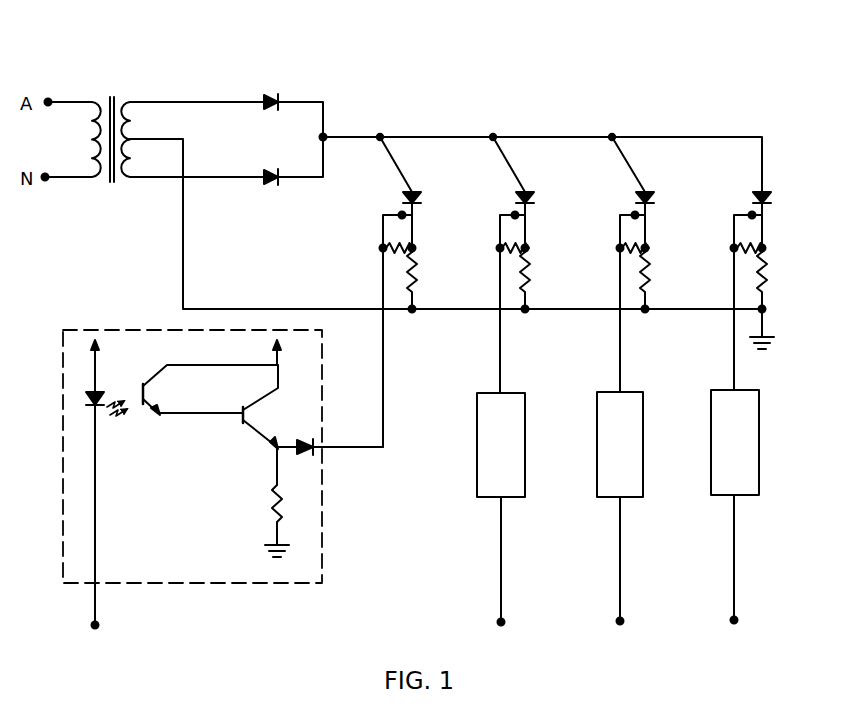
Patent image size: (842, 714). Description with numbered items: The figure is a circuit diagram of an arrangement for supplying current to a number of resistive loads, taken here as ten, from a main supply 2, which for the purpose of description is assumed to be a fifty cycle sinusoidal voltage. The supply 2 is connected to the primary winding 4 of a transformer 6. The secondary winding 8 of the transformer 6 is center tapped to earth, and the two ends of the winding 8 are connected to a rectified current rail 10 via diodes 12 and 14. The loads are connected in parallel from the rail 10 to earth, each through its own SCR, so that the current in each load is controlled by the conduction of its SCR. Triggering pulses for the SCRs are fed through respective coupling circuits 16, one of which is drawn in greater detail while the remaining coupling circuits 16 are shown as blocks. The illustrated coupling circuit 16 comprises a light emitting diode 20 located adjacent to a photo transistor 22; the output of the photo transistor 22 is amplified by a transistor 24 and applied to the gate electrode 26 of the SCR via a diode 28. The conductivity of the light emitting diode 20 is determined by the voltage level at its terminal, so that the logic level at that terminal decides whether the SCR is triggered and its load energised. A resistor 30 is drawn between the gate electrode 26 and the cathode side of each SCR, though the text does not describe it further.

The main supply 2 is at (55, 98).
The primary winding 4 is at (79, 96).
The transformer 6 is at (107, 94).
The secondary winding 8 is at (125, 96).
The rectified current rail 10 is at (453, 137).
The diode 12 is at (267, 94).
The diode 14 is at (268, 184).
The coupling circuit 16 is at (431, 482).
The light emitting diode 20 is at (98, 407).
The photo transistor 22 is at (144, 406).
The transistor 24 is at (241, 416).
The gate electrode 26 is at (560, 292).
The diode 28 is at (301, 440).
The gate resistor 30 is at (593, 284).